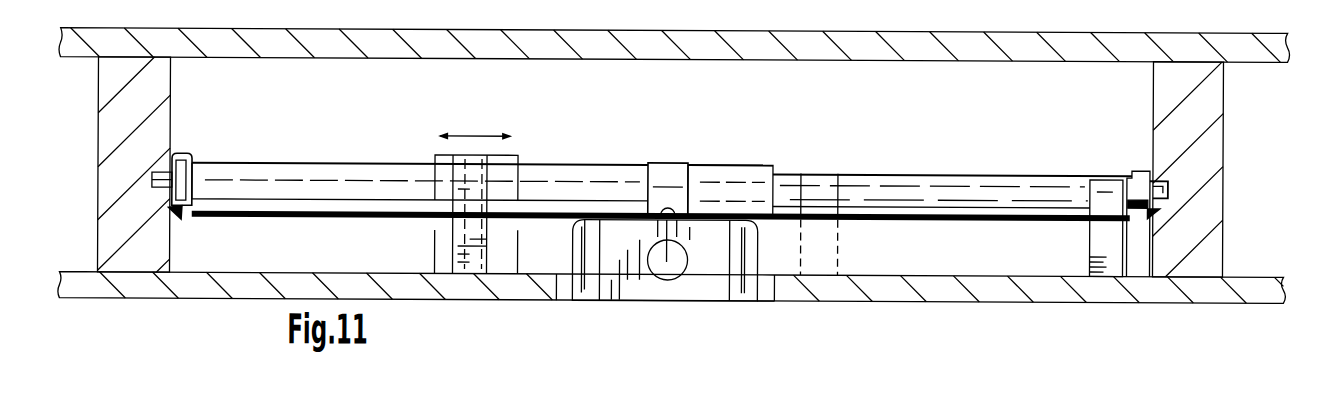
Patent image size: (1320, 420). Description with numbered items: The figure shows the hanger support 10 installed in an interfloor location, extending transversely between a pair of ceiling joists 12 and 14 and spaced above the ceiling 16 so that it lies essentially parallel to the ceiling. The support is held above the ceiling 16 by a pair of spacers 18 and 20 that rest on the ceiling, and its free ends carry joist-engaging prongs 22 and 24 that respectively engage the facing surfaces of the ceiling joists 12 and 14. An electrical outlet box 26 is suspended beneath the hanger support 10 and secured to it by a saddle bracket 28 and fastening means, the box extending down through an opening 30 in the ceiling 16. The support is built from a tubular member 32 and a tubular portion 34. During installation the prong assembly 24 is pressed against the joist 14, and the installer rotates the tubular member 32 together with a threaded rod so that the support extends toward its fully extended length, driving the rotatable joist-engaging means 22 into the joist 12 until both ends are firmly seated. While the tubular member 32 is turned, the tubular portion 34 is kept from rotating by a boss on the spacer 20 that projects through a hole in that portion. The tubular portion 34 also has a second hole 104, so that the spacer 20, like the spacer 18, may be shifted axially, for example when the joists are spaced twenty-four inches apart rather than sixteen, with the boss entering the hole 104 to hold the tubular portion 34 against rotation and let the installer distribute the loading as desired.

The hanger support 10 is at (567, 136).
The ceiling joist 12 is at (150, 130).
The ceiling joist 14 is at (1198, 222).
The ceiling 16 is at (873, 294).
The spacer 18 is at (462, 246).
The spacer 20 is at (1110, 245).
The joist-engaging prong 22 is at (131, 164).
The joist-engaging prong 24 is at (1185, 173).
The electrical outlet box 26 is at (622, 300).
The saddle bracket 28 is at (673, 177).
The opening 30 is at (770, 294).
The tubular member 32 is at (627, 175).
The tubular portion 34 is at (963, 186).
The second hole 104 is at (817, 214).